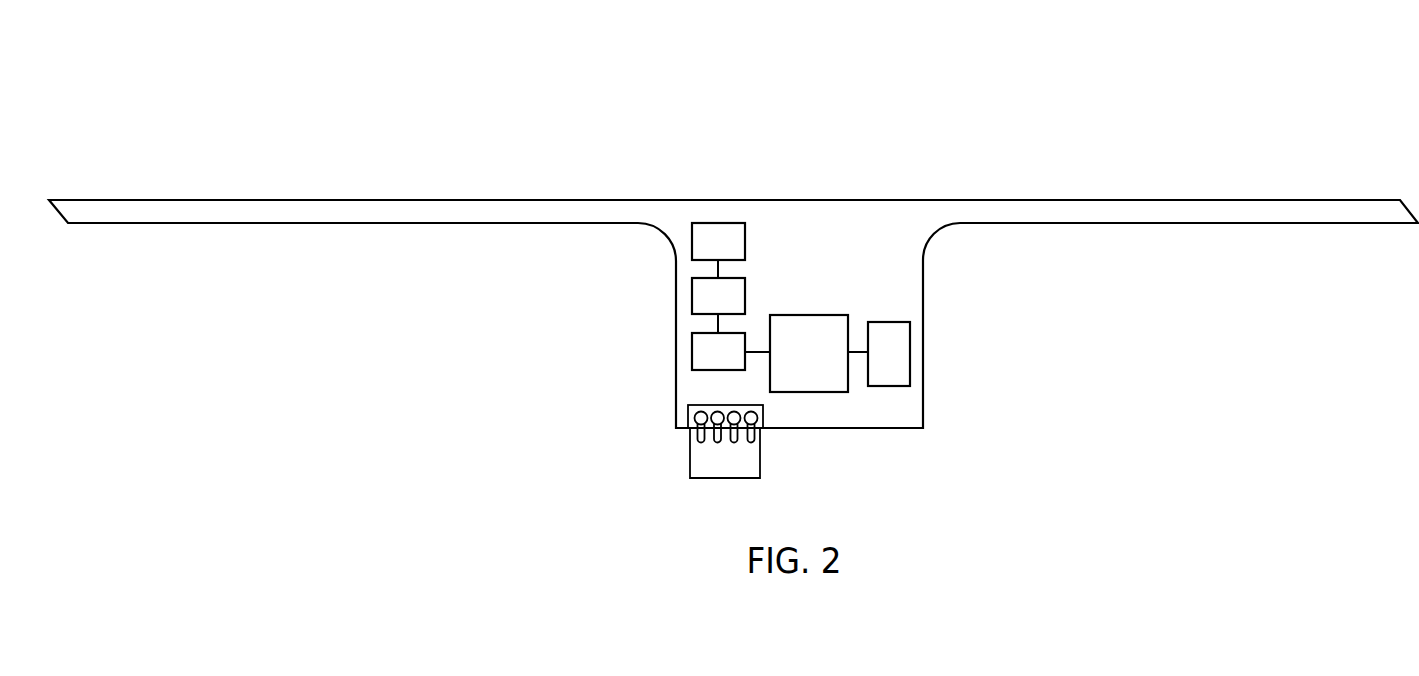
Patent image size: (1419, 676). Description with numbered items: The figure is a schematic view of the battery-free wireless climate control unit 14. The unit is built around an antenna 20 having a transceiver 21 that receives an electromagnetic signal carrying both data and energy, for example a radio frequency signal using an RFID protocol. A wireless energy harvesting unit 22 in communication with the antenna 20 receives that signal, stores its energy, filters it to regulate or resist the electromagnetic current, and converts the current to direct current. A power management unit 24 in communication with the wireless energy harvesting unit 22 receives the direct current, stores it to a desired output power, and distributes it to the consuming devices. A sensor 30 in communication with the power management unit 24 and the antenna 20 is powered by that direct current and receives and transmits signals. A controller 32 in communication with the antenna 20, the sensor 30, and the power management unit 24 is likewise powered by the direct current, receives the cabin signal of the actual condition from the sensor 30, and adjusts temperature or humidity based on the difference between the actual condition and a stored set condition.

The climate control unit 14 is at (202, 130).
The antenna 20 is at (429, 200).
The transceiver 21 is at (718, 241).
The wireless energy harvesting unit 22 is at (718, 296).
The power management unit 24 is at (718, 351).
The sensor 30 is at (809, 353).
The controller 32 is at (889, 354).